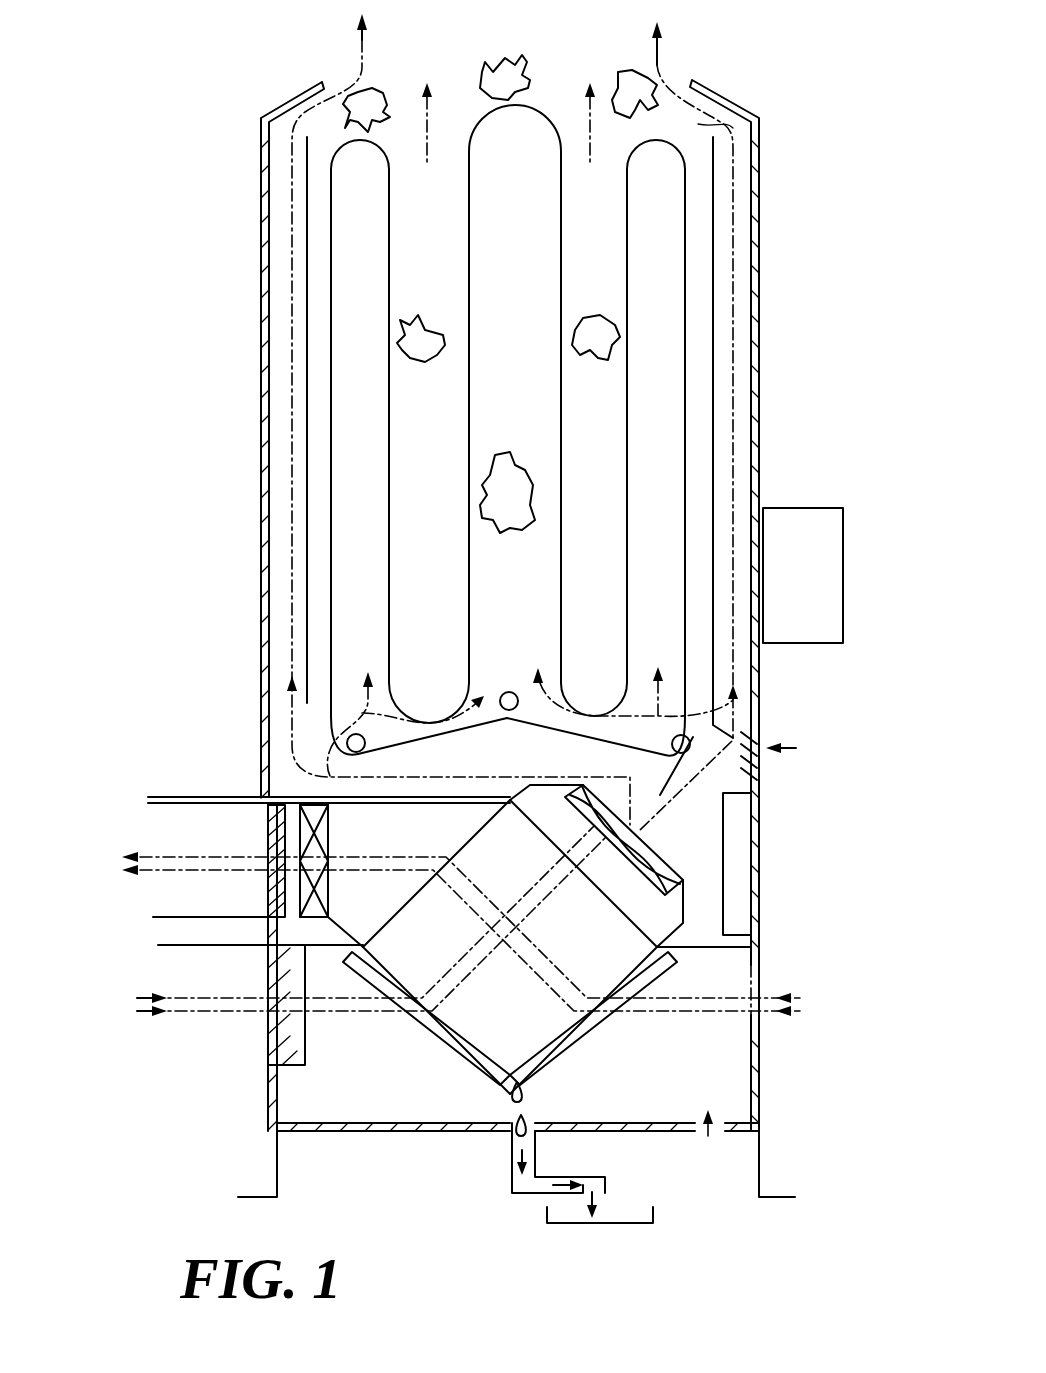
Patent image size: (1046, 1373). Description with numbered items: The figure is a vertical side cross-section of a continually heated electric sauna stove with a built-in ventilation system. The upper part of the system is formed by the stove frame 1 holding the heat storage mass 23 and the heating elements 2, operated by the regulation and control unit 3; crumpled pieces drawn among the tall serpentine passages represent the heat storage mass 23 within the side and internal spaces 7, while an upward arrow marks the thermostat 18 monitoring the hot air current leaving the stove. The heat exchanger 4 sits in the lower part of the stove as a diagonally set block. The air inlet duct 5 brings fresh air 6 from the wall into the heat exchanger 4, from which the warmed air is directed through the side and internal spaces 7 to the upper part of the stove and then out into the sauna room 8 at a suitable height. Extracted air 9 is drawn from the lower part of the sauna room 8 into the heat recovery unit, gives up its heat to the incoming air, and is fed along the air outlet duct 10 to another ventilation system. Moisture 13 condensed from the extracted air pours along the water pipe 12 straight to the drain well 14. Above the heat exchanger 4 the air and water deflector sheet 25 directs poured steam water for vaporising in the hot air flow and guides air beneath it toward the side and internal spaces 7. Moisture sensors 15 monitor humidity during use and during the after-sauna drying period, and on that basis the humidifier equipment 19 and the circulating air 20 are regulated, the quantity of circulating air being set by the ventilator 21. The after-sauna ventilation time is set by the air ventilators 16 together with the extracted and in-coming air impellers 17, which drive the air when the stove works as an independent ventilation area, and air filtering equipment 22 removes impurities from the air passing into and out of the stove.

The stove frame 1 is at (262, 241).
The heating element 2 is at (543, 112).
The regulation and control unit 3 is at (737, 847).
The heat exchanger 4 is at (482, 1038).
The air inlet duct 5 is at (166, 1047).
The fresh air 6 is at (160, 996).
The side and internal spaces 7 is at (288, 411).
The sauna room 8 is at (356, 76).
The extracted air 9 is at (145, 852).
The air outlet duct 10 is at (175, 897).
The water pipe 12 is at (512, 1194).
The condensed moisture 13 is at (530, 1114).
The drain well 14 is at (657, 1212).
The moisture sensor 15 is at (739, 122).
The air ventilator 16 is at (268, 838).
The extracted and in-coming air impellers 17 is at (679, 876).
The thermostat 18 is at (701, 63).
The humidifier equipment 19 is at (826, 607).
The circulating air 20 is at (790, 750).
The ventilator 21 is at (760, 748).
The air filtering equipment 22 is at (424, 1037).
The heat storage mass 23 is at (485, 66).
The air and water deflector sheet 25 is at (614, 747).